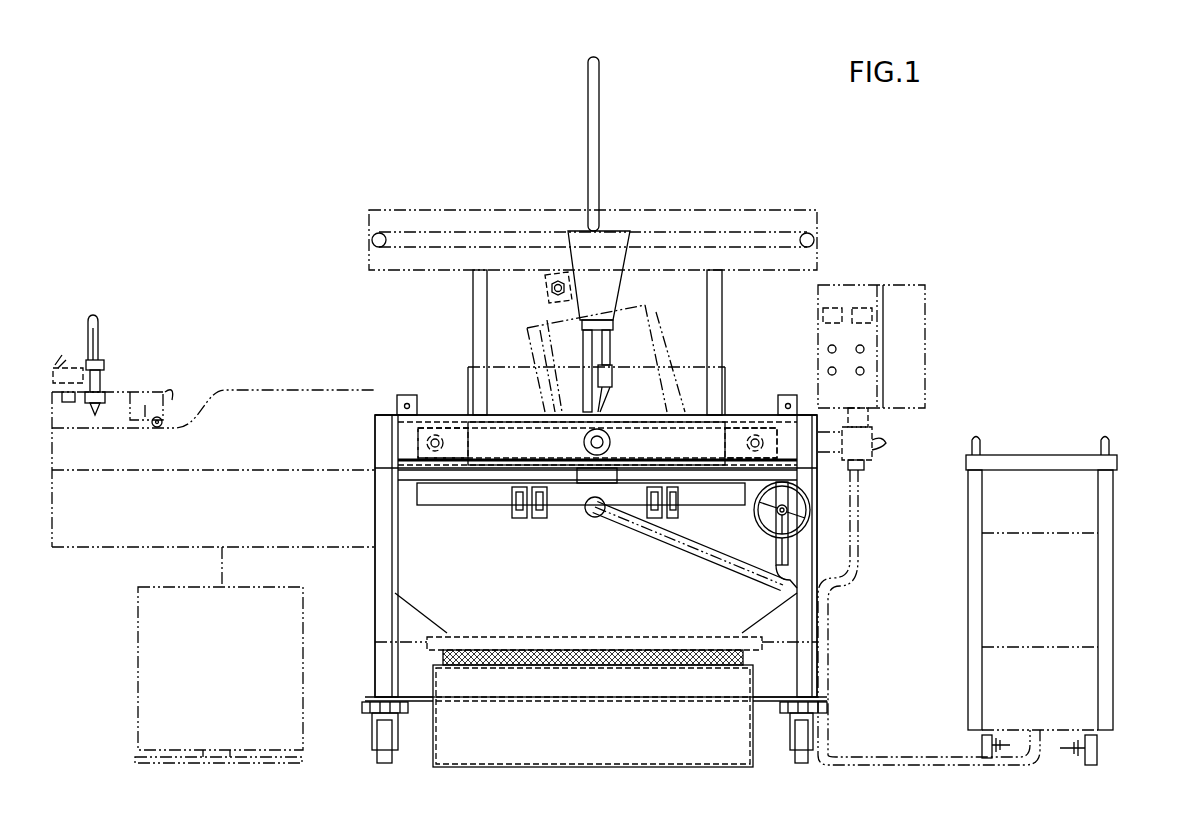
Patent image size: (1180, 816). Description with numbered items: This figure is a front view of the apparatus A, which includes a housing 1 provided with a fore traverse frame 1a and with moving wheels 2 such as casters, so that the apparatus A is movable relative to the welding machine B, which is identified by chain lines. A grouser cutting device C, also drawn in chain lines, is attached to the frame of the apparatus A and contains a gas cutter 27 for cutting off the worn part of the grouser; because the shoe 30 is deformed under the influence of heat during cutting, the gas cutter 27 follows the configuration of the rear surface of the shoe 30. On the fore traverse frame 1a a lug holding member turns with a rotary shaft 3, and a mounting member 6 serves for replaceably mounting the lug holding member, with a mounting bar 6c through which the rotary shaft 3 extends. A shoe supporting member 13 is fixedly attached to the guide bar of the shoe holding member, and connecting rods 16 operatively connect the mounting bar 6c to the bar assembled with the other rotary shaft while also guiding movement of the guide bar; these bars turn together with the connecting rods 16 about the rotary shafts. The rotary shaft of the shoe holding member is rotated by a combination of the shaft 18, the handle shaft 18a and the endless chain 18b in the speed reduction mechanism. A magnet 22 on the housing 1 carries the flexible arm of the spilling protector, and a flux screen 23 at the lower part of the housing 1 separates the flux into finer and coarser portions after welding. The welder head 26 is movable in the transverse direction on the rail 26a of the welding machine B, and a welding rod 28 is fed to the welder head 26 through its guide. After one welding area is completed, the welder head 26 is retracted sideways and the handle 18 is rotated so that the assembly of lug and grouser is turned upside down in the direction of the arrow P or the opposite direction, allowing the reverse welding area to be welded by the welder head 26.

The apparatus A is at (371, 570).
The housing 1 is at (380, 610).
The fore traverse frame 1a is at (450, 415).
The moving wheels 2 is at (383, 765).
The rotary shaft 3 is at (610, 442).
The mounting member 6 is at (728, 425).
The mounting bar 6c is at (688, 423).
The shoe supporting member 13 is at (528, 520).
The connecting rods 16 is at (550, 290).
The shaft 18 is at (806, 497).
The handle shaft 18a is at (778, 550).
The endless chain 18b is at (698, 557).
The magnet 22 is at (400, 395).
The flux screen 23 is at (655, 650).
The welder head 26 is at (578, 345).
The rail 26a is at (668, 216).
The gas cutter 27 is at (135, 372).
The welding rod 28 is at (224, 575).
The shoe 30 is at (655, 311).
The arrow P is at (525, 330).
The grouser cutting device C is at (243, 388).
The welding machine B is at (136, 645).